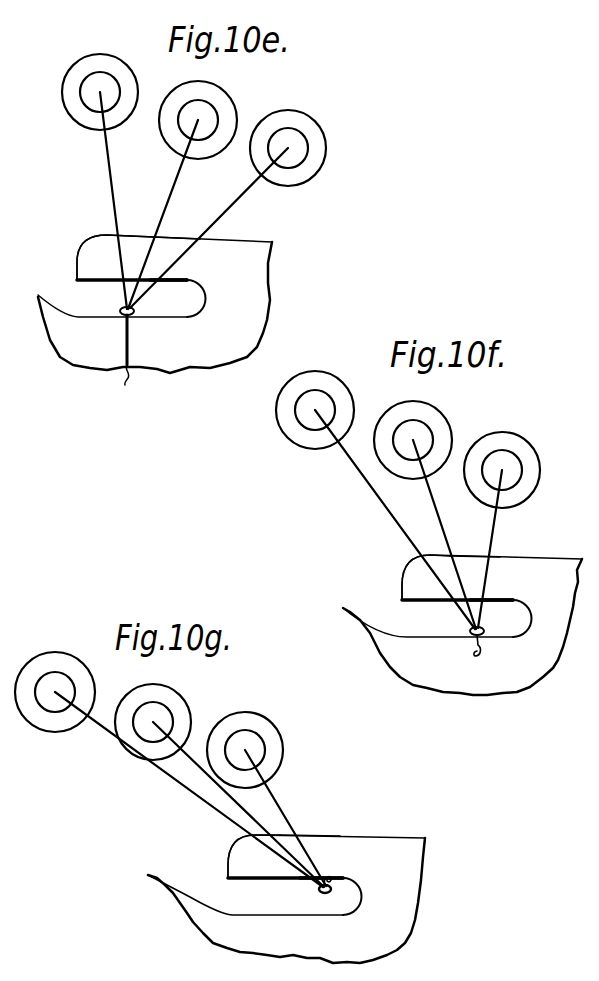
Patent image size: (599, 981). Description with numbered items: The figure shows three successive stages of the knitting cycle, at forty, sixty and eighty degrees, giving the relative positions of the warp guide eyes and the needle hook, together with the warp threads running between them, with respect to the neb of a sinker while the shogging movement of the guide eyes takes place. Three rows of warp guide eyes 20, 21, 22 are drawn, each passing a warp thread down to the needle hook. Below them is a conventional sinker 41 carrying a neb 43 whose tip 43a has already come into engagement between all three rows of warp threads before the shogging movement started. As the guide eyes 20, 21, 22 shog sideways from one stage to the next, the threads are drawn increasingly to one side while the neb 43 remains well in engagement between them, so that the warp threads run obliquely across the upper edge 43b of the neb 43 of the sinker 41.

In FIG. 10E, the guide eye 20 is at (118, 63).
In FIG. 10F, the guide eye 20 is at (343, 398).
In FIG. 10G, the guide eye 20 is at (65, 655).
In FIG. 10E, the guide eye 21 is at (233, 113).
In FIG. 10F, the guide eye 21 is at (443, 430).
In FIG. 10G, the guide eye 21 is at (172, 693).
In FIG. 10E, the guide eye 22 is at (323, 147).
In FIG. 10F, the guide eye 22 is at (538, 472).
In FIG. 10G, the guide eye 22 is at (272, 727).
In FIG. 10E, the sinker 41 is at (177, 363).
In FIG. 10F, the sinker 41 is at (502, 682).
In FIG. 10G, the sinker 41 is at (397, 943).
In FIG. 10E, the neb 43 is at (217, 248).
In FIG. 10F, the neb 43 is at (517, 570).
In FIG. 10G, the neb 43 is at (383, 843).
In FIG. 10E, the tip of neb 43a is at (80, 260).
In FIG. 10F, the tip of neb 43a is at (400, 583).
In FIG. 10G, the tip of neb 43a is at (232, 855).
In FIG. 10E, the upper edge of neb 43b is at (163, 242).
In FIG. 10F, the upper edge of neb 43b is at (475, 555).
In FIG. 10G, the upper edge of neb 43b is at (320, 833).